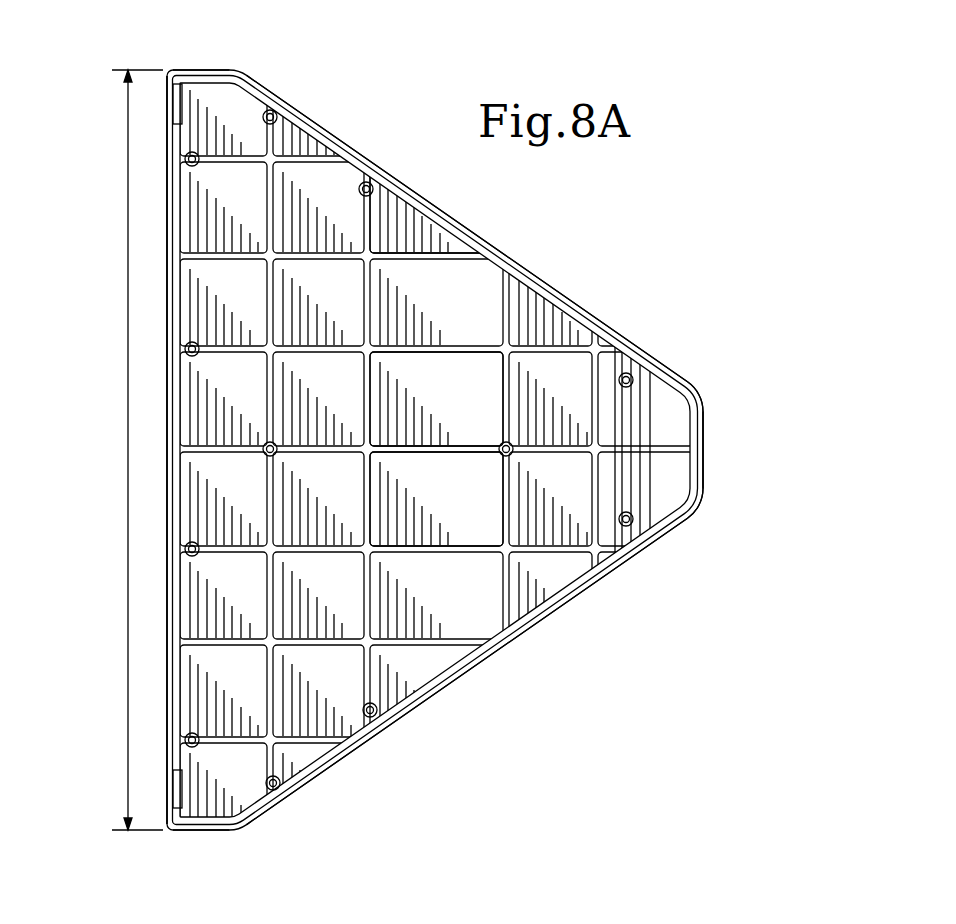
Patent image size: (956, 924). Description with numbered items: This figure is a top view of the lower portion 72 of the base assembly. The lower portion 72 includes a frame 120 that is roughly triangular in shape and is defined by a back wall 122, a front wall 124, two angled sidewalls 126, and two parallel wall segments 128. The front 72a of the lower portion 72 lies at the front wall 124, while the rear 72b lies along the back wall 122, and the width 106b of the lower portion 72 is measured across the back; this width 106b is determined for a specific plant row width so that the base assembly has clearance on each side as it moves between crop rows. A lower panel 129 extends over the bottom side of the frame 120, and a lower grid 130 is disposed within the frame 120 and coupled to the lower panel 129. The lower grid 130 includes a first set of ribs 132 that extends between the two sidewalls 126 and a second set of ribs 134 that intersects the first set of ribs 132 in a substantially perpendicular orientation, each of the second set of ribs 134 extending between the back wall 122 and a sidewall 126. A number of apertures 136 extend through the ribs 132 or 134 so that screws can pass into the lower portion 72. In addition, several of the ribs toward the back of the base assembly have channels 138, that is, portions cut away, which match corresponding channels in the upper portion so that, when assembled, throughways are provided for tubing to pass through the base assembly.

The lower portion 72 is at (707, 323).
The front 72a is at (703, 448).
The rear 72b is at (168, 383).
The width 106b is at (128, 282).
The frame 120 is at (378, 742).
The back wall 122 is at (160, 517).
The front wall 124 is at (703, 470).
The angled sidewalls 126 is at (571, 303).
The parallel wall segments 128 is at (240, 69).
The lower panel 129 is at (490, 398).
The lower grid 130 is at (450, 347).
The first set of ribs 132 is at (512, 598).
The second set of ribs 134 is at (393, 257).
The apertures 136 is at (278, 117).
The channels 138 is at (430, 642).